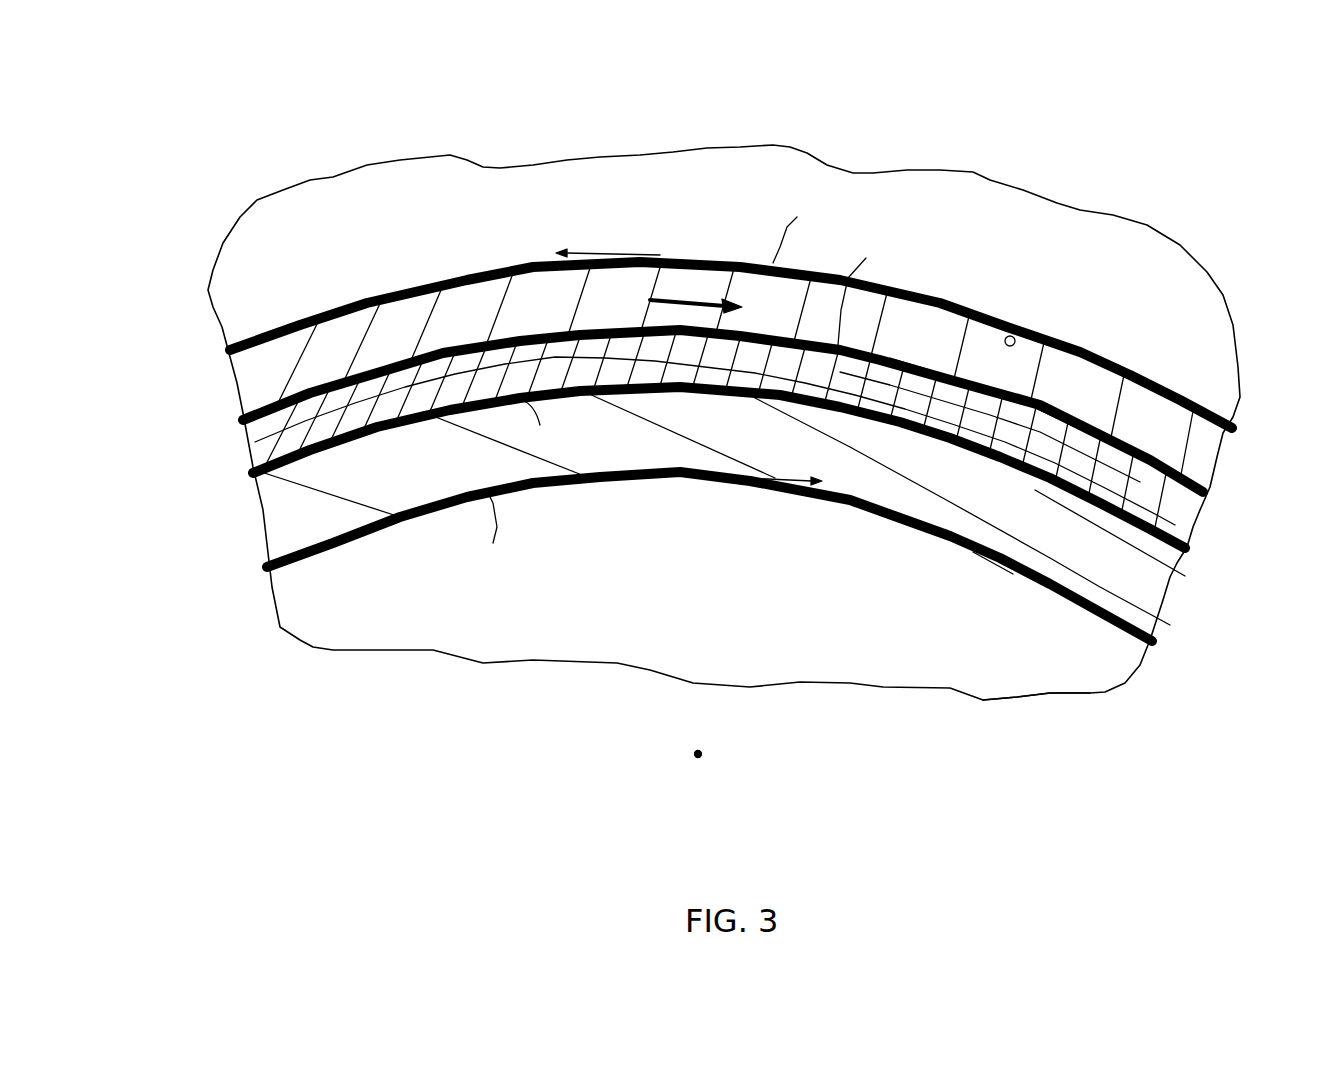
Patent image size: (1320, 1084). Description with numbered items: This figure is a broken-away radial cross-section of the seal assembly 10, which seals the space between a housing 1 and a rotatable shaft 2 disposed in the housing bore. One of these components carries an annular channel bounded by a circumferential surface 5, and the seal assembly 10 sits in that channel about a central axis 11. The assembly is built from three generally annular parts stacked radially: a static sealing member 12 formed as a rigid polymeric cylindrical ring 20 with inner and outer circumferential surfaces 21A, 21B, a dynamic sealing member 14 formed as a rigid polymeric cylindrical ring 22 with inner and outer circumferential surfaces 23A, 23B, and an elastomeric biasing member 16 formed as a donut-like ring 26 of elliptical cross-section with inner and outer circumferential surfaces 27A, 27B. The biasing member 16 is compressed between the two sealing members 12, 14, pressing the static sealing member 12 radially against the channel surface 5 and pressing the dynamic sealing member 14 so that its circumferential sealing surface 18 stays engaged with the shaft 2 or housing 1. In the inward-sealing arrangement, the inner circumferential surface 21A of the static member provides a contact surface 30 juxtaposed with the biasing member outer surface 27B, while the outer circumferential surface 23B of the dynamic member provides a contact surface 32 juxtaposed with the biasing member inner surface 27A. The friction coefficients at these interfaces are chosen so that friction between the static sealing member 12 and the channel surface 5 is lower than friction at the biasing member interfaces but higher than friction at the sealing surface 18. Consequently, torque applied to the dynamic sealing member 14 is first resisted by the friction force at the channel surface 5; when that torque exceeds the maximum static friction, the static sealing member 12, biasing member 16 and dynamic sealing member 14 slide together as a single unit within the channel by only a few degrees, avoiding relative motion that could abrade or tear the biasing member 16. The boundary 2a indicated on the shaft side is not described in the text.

The housing 1 is at (983, 193).
The rotatable shaft 2 is at (1030, 688).
The substrate boundary line 2a is at (883, 503).
The circumferential surface 5 is at (1015, 333).
The seal assembly 10 is at (322, 208).
The central axis 11 is at (707, 750).
The static sealing member 12 is at (272, 323).
The dynamic sealing member 14 is at (398, 512).
The biasing member 16 is at (240, 443).
The circumferential sealing surface 18 is at (600, 481).
The cylindrical ring 20 is at (1157, 422).
The inner circumferential surface 21A is at (1053, 434).
The outer circumferential surface 21B is at (1104, 347).
The cylindrical ring 22 is at (1145, 585).
The inner circumferential surface 23A is at (993, 563).
The outer circumferential surface 23B is at (1117, 497).
The ring 26 is at (1167, 502).
The inner circumferential surface 27A is at (980, 460).
The outer circumferential surface 27B is at (911, 350).
The contact surface 30 is at (414, 382).
The contact surface 32 is at (454, 405).